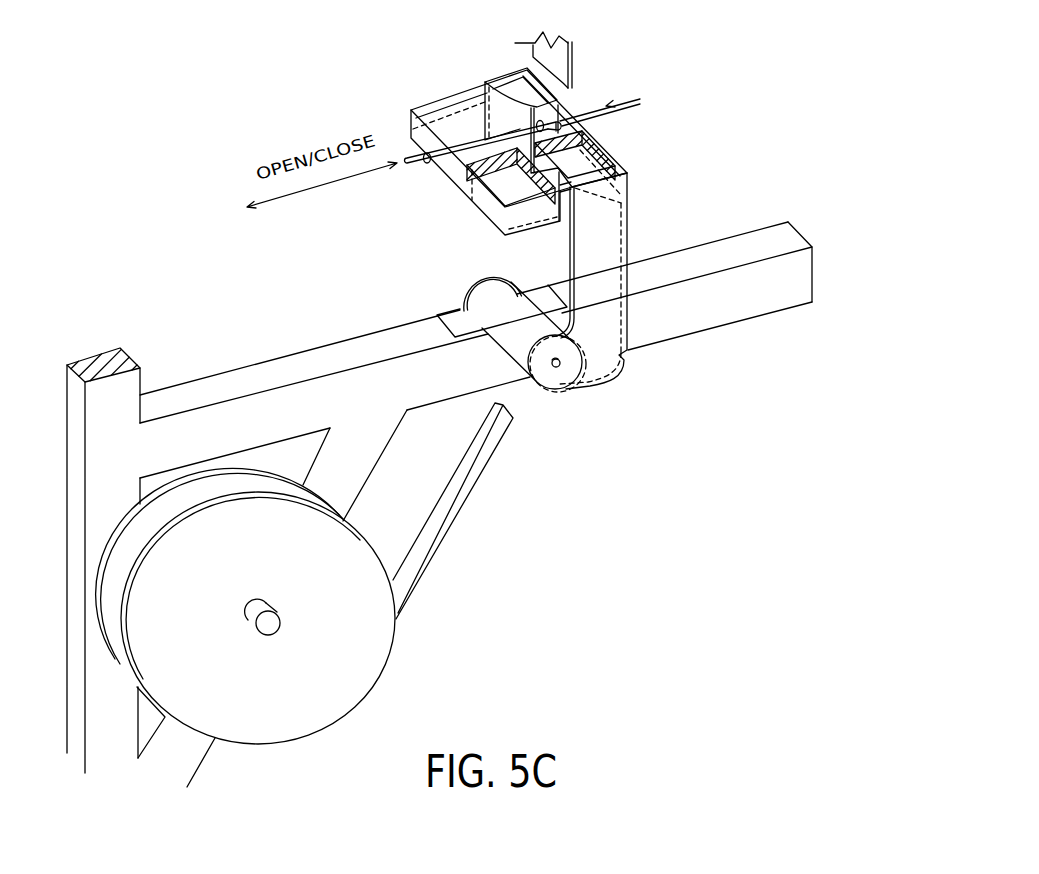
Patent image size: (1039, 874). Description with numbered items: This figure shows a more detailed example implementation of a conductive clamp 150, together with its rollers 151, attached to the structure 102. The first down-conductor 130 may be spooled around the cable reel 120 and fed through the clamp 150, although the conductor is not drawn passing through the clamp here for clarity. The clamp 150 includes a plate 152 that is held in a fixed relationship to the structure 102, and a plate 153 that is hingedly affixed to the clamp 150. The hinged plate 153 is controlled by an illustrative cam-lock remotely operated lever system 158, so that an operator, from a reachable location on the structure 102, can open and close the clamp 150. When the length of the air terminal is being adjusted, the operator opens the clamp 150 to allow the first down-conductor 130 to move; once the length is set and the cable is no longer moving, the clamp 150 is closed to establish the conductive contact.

The structure 102 is at (361, 412).
The cable reel 120 is at (278, 692).
The first down-conductor 130 is at (572, 54).
The clamp 150 is at (626, 357).
The rollers 151 is at (505, 317).
The plate 152 is at (602, 160).
The plate 153 is at (487, 209).
The cam-lock remotely operated lever system 158 is at (641, 92).